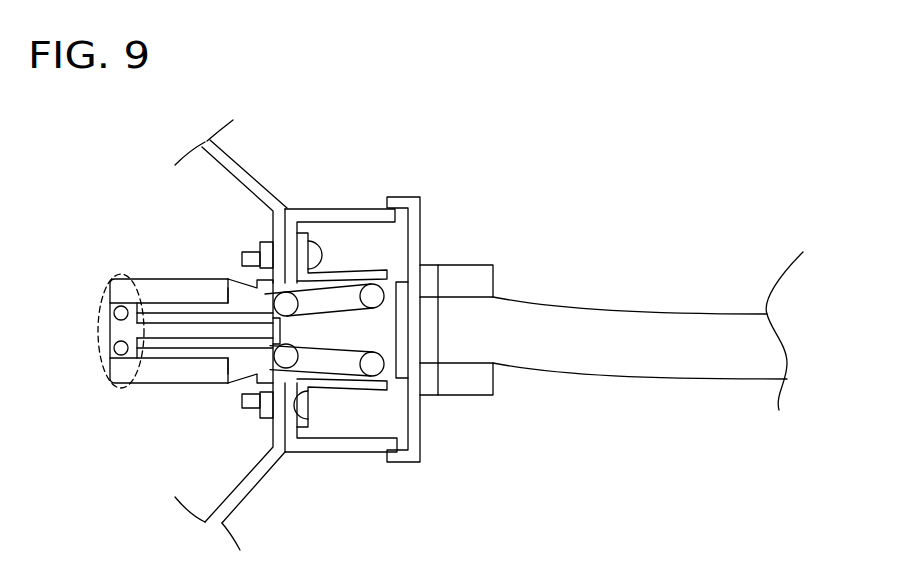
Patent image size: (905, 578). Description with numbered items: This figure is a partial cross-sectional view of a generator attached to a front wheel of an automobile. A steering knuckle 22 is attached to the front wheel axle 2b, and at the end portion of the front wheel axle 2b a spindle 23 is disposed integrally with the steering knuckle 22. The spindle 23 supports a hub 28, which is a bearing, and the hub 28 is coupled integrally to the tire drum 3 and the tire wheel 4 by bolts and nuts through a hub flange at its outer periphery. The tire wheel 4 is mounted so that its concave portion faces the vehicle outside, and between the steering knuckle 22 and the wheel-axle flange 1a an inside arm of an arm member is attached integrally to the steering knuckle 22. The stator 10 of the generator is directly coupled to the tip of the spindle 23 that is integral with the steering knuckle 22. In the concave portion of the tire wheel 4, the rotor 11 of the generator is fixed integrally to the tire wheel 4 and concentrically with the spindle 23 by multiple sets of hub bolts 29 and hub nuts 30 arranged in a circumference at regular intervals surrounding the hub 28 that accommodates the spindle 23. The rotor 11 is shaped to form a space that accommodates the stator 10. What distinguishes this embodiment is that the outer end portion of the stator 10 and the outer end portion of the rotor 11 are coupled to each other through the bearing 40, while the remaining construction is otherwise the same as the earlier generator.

The wheel-axle flange 1a is at (404, 193).
The front wheel axle 2b is at (482, 330).
The tire drum 3 is at (316, 208).
The tire wheel 4 is at (250, 487).
The stator 10 is at (163, 338).
The rotor 11 is at (163, 292).
The steering knuckle 22 is at (480, 282).
The spindle 23 is at (357, 330).
The hub 28 is at (384, 269).
The hub bolt 29 is at (250, 252).
The hub nut 30 is at (260, 420).
The bearing 40 is at (98, 340).